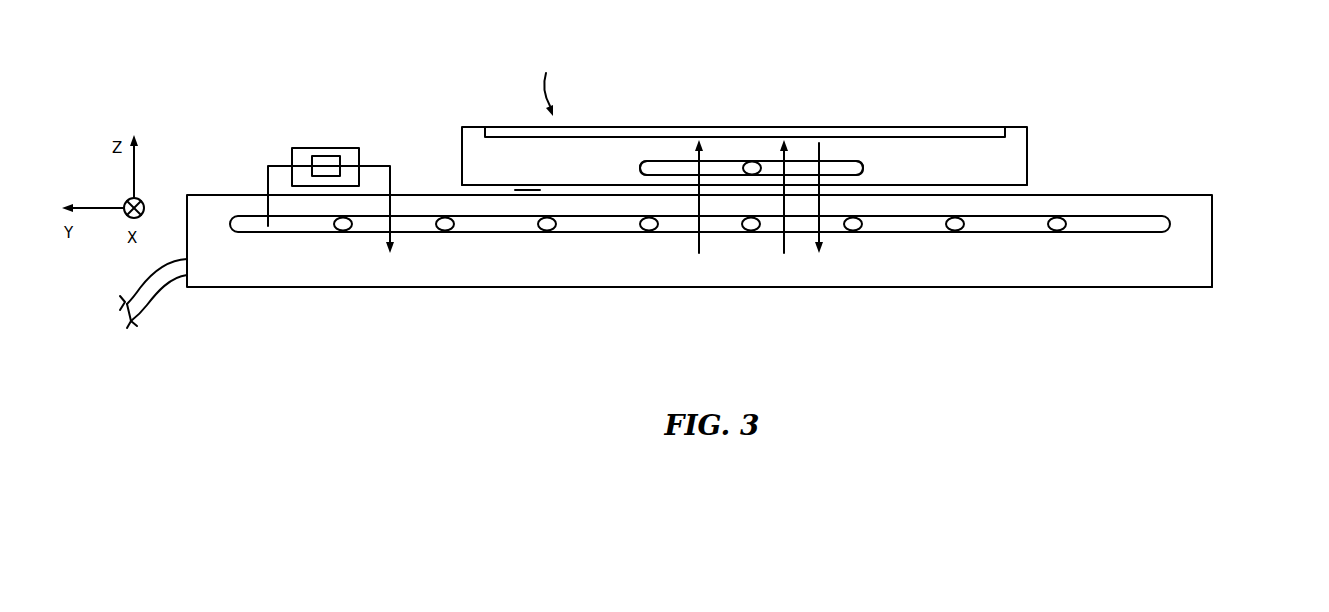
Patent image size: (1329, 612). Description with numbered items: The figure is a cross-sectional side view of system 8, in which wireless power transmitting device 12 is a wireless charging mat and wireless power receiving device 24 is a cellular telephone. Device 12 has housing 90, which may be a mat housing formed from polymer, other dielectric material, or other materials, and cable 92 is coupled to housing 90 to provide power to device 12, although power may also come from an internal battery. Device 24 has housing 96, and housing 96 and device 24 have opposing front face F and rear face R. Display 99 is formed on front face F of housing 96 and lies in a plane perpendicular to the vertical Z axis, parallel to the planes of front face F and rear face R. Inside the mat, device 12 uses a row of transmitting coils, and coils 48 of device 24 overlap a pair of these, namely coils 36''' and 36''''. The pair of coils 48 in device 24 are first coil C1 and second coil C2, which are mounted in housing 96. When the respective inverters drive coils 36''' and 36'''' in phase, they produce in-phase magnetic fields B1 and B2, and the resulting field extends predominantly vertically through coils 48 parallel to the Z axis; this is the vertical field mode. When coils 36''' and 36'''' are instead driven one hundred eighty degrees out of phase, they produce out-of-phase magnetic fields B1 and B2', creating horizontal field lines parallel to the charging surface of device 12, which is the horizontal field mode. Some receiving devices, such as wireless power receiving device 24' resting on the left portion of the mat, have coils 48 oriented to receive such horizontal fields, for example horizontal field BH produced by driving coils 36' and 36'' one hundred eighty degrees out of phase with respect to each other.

The system 8 is at (1273, 100).
The wireless power transmitting device 12 is at (1233, 193).
The wireless power receiving device 24 is at (772, 156).
The wireless power receiving device 24' is at (325, 136).
The coil 36' is at (287, 281).
The coil 36'' is at (440, 281).
The coil 36''' is at (716, 281).
The coil 36'''' is at (831, 281).
The coils 48 is at (318, 156).
The housing 90 is at (986, 288).
The cable 92 is at (156, 303).
The housing 96 is at (1028, 152).
The display 99 is at (507, 136).
The horizontal field BH is at (375, 165).
The magnetic field B1 is at (703, 167).
The magnetic field B2 is at (773, 167).
The magnetic field B2' is at (832, 164).
The first coil C1 is at (640, 166).
The second coil C2 is at (864, 170).
The front face F is at (546, 85).
The rear face R is at (527, 186).